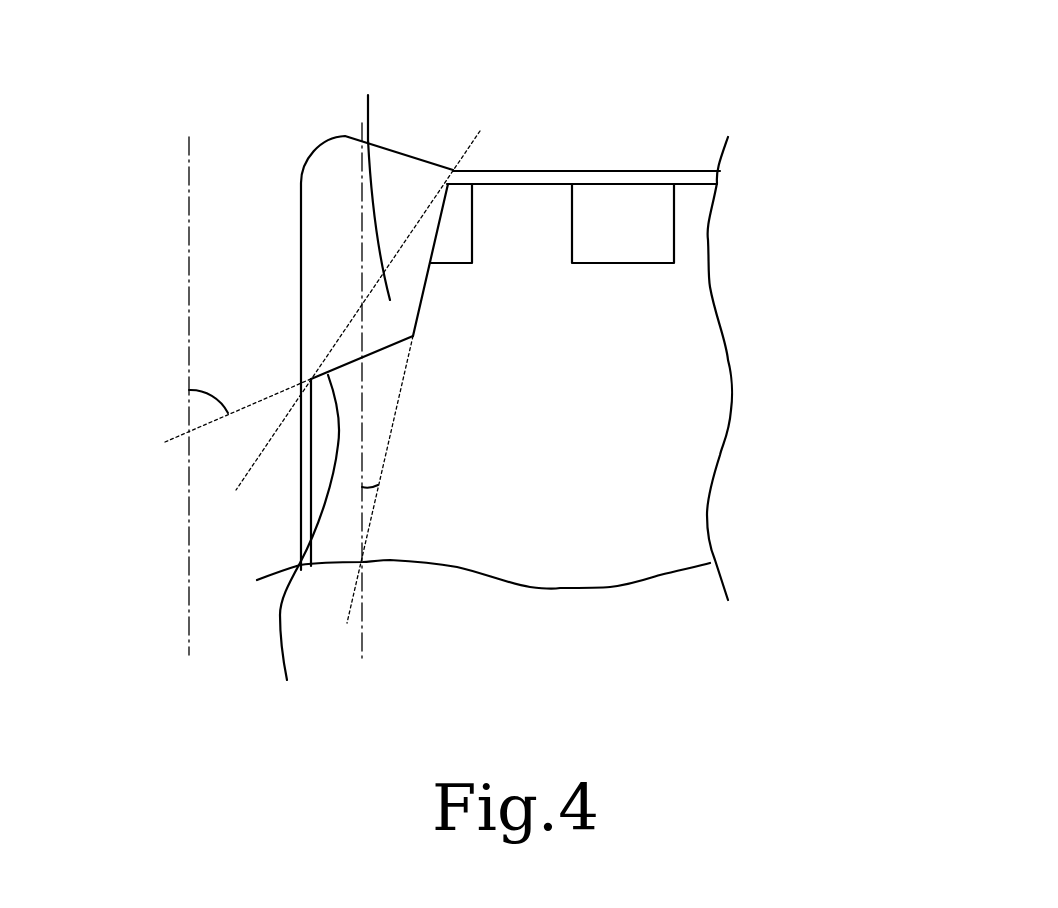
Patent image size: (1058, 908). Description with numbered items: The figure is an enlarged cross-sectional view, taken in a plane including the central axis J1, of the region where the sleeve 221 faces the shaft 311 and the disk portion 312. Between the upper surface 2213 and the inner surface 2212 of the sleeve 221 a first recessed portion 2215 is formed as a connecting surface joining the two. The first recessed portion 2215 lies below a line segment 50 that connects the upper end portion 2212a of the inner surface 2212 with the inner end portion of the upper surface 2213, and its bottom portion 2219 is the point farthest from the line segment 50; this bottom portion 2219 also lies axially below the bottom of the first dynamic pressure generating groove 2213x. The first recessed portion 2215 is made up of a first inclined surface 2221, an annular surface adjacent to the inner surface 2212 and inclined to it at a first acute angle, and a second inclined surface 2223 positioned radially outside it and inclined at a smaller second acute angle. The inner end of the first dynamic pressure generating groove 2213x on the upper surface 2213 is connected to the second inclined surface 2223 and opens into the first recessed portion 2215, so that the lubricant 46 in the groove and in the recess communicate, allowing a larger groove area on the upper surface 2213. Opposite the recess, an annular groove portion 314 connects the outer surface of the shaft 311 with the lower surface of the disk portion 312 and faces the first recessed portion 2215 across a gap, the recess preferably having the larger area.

The central axis J1 is at (190, 204).
The annular groove portion 314 is at (325, 175).
The first recessed portion 2215 is at (384, 184).
The line segment 50 is at (474, 143).
The disk portion 312 is at (555, 128).
The lubricant 46 is at (597, 177).
The upper surface 2213 is at (685, 183).
The first dynamic pressure generating groove 2213x is at (650, 233).
The shaft 311 is at (251, 266).
The upper end portion of the inner surface 2212a is at (308, 378).
The second inclined surface 2223 is at (422, 297).
The bottom portion 2219 is at (418, 343).
The sleeve 221 is at (652, 468).
The inner surface 2212 is at (305, 492).
The first inclined surface 2221 is at (294, 544).